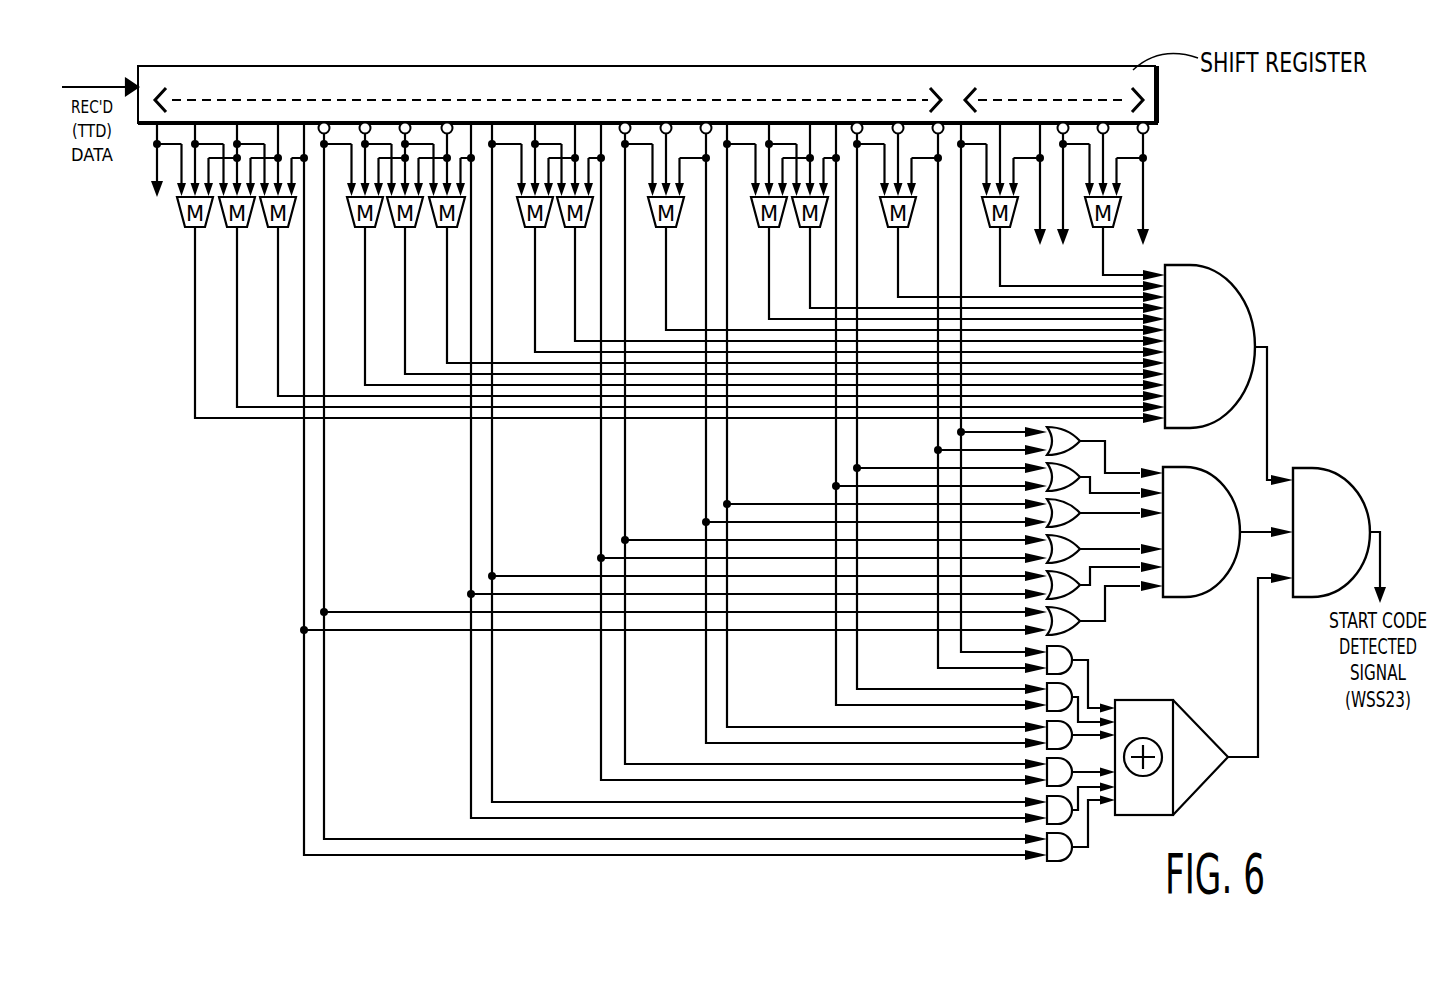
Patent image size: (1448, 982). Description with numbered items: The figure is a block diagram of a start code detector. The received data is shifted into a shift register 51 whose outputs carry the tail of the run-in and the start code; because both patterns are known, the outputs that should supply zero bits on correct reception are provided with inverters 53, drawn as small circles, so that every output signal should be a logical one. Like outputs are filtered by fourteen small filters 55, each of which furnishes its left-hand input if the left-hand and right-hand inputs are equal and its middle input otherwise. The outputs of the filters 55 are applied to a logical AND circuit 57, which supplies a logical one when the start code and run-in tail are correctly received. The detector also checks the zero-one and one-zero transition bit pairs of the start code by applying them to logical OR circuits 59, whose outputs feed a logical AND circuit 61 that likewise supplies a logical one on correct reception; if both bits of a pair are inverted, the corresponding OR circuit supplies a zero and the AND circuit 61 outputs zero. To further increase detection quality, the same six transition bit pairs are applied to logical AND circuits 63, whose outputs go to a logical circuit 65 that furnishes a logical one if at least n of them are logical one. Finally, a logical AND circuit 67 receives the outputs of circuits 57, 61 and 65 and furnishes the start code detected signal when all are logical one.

The shift register 51 is at (1157, 78).
The inverters 53 is at (1148, 131).
The filters 55 is at (1118, 202).
The logical AND circuit 57 is at (1213, 290).
The logical OR circuits 59 is at (1083, 434).
The logical AND circuit 61 is at (1211, 570).
The logical AND circuits 63 is at (1073, 650).
The logical circuit 65 is at (1147, 700).
The logical AND circuit 67 is at (1325, 487).